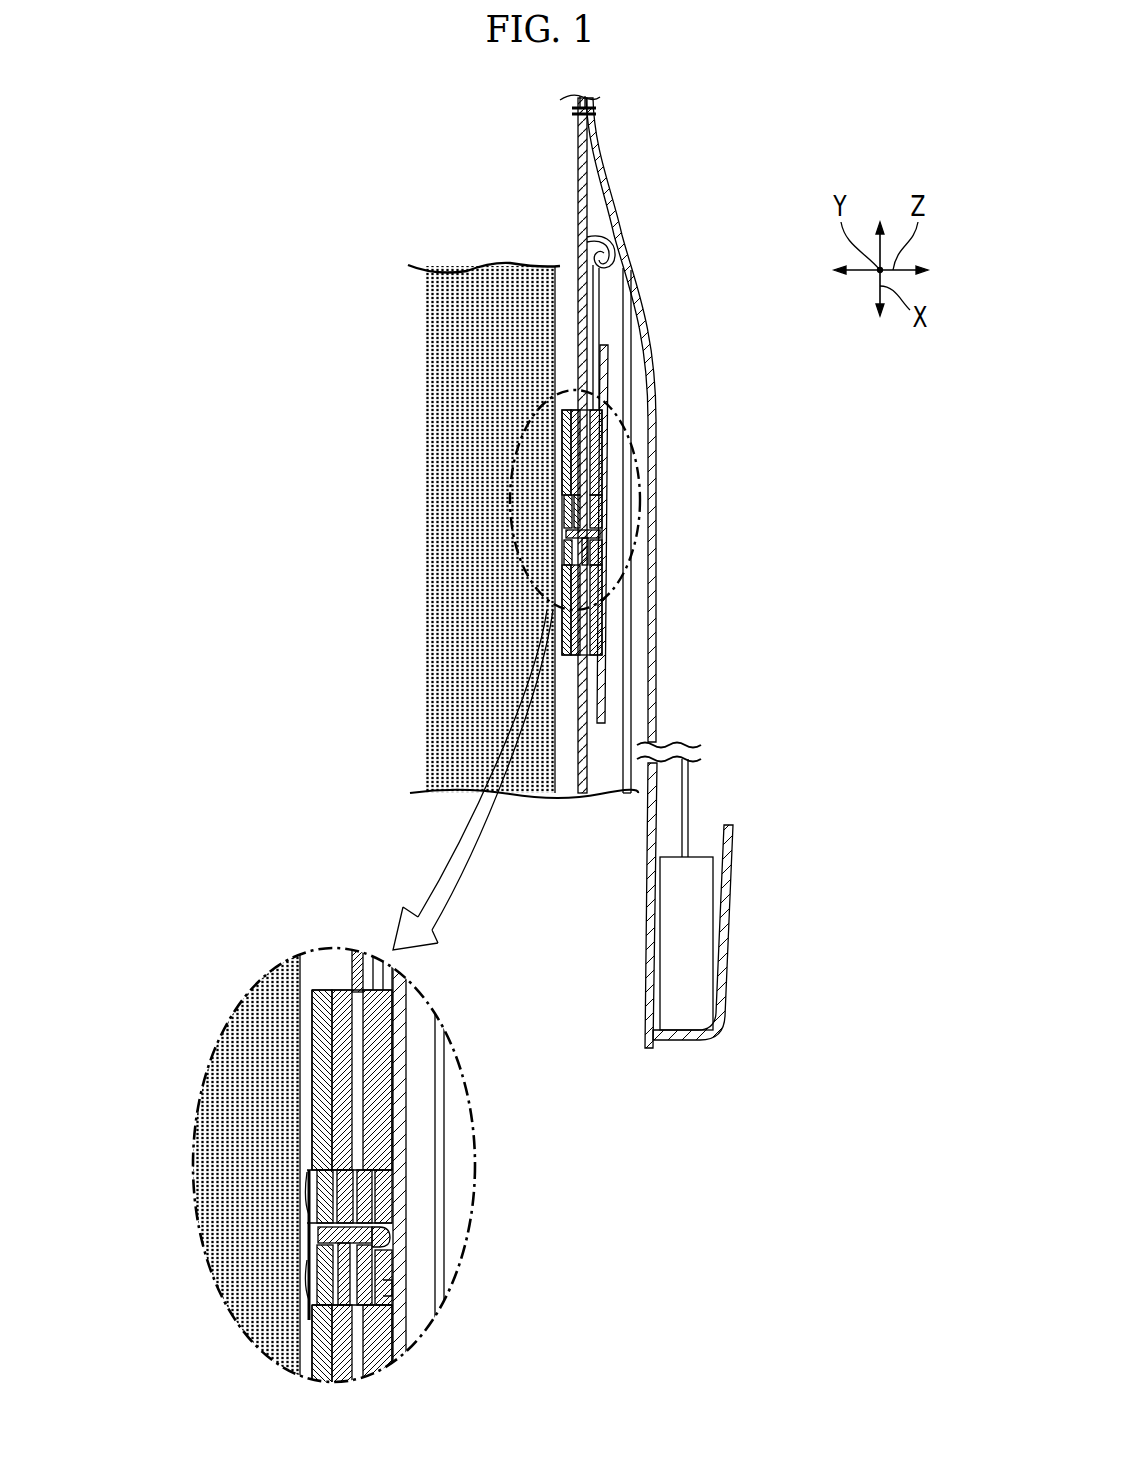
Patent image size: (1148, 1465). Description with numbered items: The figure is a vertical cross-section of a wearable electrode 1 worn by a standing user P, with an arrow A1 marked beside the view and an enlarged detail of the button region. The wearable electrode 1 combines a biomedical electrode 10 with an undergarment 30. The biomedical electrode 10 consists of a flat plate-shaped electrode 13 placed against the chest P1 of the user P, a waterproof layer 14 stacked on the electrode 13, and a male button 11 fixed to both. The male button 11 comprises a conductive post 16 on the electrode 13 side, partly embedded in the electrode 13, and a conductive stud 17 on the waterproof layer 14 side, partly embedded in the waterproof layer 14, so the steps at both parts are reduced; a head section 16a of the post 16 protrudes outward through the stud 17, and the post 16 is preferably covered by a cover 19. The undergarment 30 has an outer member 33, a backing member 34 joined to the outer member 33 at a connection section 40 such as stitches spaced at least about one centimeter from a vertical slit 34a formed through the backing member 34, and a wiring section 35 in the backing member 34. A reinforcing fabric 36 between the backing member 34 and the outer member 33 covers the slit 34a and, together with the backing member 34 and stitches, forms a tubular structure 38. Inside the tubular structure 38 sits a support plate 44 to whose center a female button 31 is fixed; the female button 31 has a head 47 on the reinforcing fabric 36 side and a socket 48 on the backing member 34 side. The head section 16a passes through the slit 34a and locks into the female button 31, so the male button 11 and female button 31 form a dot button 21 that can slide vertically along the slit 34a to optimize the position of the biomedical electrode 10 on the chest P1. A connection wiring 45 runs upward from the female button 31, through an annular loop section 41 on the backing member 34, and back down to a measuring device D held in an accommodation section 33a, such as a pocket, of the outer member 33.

The wearable electrode 1 is at (406, 144).
The biomedical electrode 10 is at (405, 905).
The male button 11 is at (339, 912).
The electrode 13 is at (563, 664).
The waterproof layer 14 is at (578, 666).
The post 16 is at (318, 1222).
The head section 16a is at (383, 1290).
The stud 17 is at (318, 1190).
The cover 19 is at (308, 1258).
The dot button 21 is at (340, 912).
The undergarment 30 is at (617, 148).
The female button 31 is at (454, 900).
The outer member 33 is at (607, 196).
The accommodation section 33a is at (722, 937).
The backing member 34 is at (577, 198).
The slit 34a is at (352, 1020).
The wiring section 35 is at (652, 556).
The reinforcing fabric 36 is at (606, 360).
The tubular structure 38 is at (628, 440).
The connection section 40 is at (572, 111).
The loop section 41 is at (592, 246).
The support plate 44 is at (601, 470).
The connection wiring 45 is at (625, 330).
The head 47 is at (388, 1258).
The socket 48 is at (372, 1190).
The user P is at (424, 252).
The chest P1 is at (467, 375).
The measuring device D is at (688, 968).
The viewing direction A1 is at (815, 555).